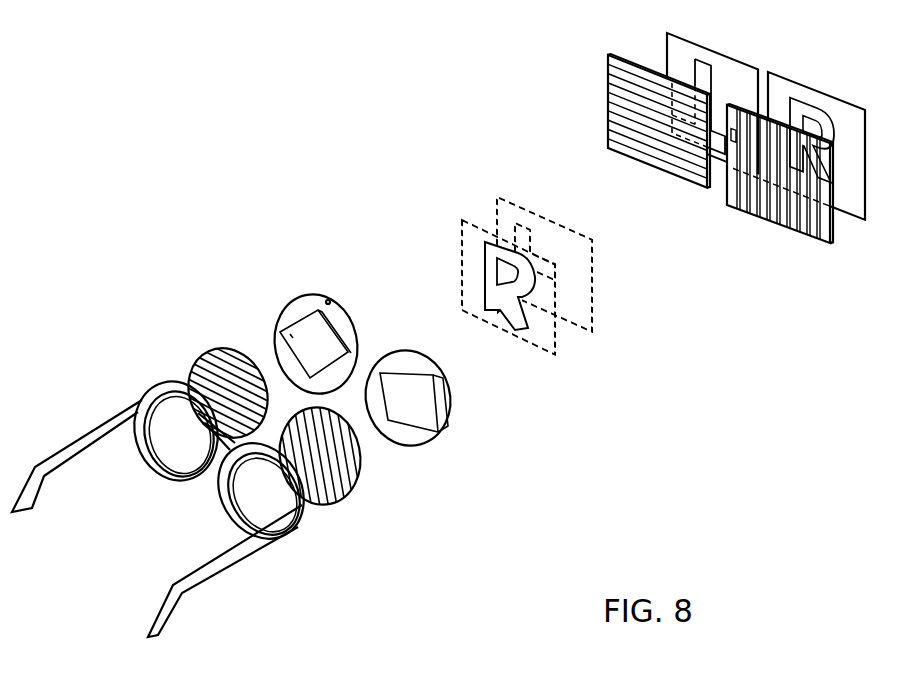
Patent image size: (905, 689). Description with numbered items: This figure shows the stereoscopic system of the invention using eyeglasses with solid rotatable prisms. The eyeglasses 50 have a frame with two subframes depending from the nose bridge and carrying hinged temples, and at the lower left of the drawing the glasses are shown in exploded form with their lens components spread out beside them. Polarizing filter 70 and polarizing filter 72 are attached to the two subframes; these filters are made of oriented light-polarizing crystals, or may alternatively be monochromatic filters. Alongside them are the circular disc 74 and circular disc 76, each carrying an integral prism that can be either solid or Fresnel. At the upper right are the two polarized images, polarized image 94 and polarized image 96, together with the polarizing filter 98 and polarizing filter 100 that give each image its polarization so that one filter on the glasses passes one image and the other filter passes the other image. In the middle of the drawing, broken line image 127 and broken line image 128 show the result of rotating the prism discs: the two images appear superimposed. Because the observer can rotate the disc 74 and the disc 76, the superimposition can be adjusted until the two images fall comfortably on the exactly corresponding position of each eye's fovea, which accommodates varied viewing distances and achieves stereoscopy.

The eyeglasses 50 is at (282, 540).
The polarizing filter 70 is at (352, 452).
The polarizing filter 72 is at (240, 363).
The circular disc 74 is at (423, 442).
The circular disc 76 is at (283, 313).
The polarized image 94 is at (675, 42).
The polarized image 96 is at (777, 80).
The polarizing filter 98 is at (632, 152).
The polarizing filter 100 is at (812, 238).
The broken line image 127 is at (592, 323).
The broken line image 128 is at (555, 358).